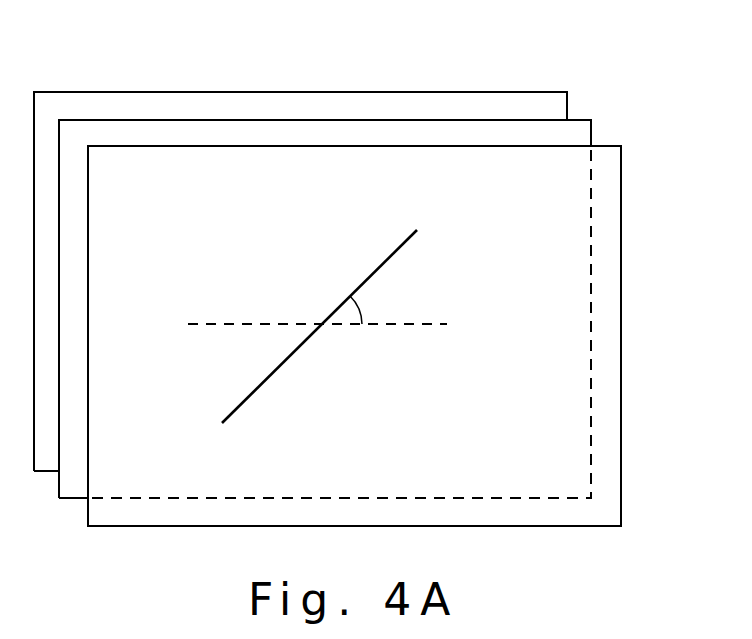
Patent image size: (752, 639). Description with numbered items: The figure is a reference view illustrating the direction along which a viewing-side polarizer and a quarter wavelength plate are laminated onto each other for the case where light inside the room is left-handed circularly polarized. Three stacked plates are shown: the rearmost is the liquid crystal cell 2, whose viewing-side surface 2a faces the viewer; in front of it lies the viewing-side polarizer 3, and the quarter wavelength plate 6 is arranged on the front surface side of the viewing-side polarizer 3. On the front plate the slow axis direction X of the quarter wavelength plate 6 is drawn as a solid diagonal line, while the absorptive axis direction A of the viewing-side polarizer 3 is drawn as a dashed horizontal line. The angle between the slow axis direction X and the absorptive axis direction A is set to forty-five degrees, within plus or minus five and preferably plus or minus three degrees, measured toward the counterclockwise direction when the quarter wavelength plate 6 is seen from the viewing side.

The liquid crystal cell 2 is at (568, 99).
The viewing-side surface of the liquid crystal cell 2a is at (366, 103).
The viewing-side polarizer 3 is at (594, 135).
The ¼ wavelength plate 6 is at (623, 236).
The slow axis direction X is at (350, 293).
The absorptive axis direction A is at (234, 323).